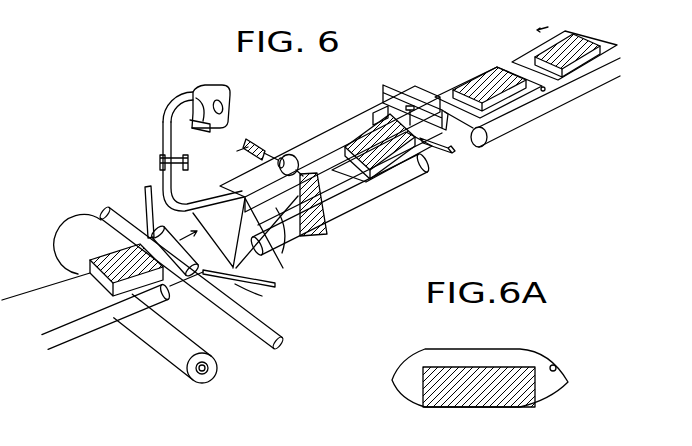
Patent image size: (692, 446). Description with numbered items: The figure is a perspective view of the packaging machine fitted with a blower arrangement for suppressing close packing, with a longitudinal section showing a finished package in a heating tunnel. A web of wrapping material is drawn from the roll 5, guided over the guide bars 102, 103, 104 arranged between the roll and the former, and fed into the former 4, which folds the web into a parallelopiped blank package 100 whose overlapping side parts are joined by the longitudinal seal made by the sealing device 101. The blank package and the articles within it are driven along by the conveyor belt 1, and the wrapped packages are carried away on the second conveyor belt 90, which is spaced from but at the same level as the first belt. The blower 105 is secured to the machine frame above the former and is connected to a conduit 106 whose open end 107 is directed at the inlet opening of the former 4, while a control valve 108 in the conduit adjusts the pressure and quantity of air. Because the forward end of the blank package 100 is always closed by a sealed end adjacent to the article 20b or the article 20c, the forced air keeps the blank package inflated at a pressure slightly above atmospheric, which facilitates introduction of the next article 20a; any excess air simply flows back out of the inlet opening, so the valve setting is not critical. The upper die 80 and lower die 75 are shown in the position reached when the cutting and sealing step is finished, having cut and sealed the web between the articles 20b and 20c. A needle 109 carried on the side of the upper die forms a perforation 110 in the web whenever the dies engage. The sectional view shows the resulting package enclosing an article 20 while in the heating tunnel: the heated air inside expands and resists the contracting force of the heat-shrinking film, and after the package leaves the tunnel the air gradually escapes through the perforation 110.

In FIG. 6, the conveyor belt 1 is at (353, 202).
In FIG. 6, the former 4 is at (280, 248).
In FIG. 6, the roll 5 is at (212, 379).
In FIG. 6A, the article 20 is at (466, 370).
In FIG. 6, the article 20a is at (100, 256).
In FIG. 6, the article 20b is at (356, 132).
In FIG. 6, the article 20c is at (487, 48).
In FIG. 6, the lower die 75 is at (449, 154).
In FIG. 6, the upper die 80 is at (385, 95).
In FIG. 6, the conveyor belt 90 is at (533, 112).
In FIG. 6, the parallelopiped blank package 100 is at (366, 182).
In FIG. 6A, the parallelopiped blank package 100 is at (537, 338).
In FIG. 6, the sealing device 101 is at (285, 142).
In FIG. 6, the guide bar 102 is at (280, 350).
In FIG. 6, the guide bar 103 is at (278, 287).
In FIG. 6, the guide bar 104 is at (146, 193).
In FIG. 6, the blower 105 is at (226, 96).
In FIG. 6, the conduit 106 is at (168, 106).
In FIG. 6, the open end 107 is at (238, 286).
In FIG. 6, the control valve 108 is at (188, 162).
In FIG. 6, the needle 109 is at (410, 104).
In FIG. 6, the perforation 110 is at (545, 92).
In FIG. 6A, the perforation 110 is at (557, 367).